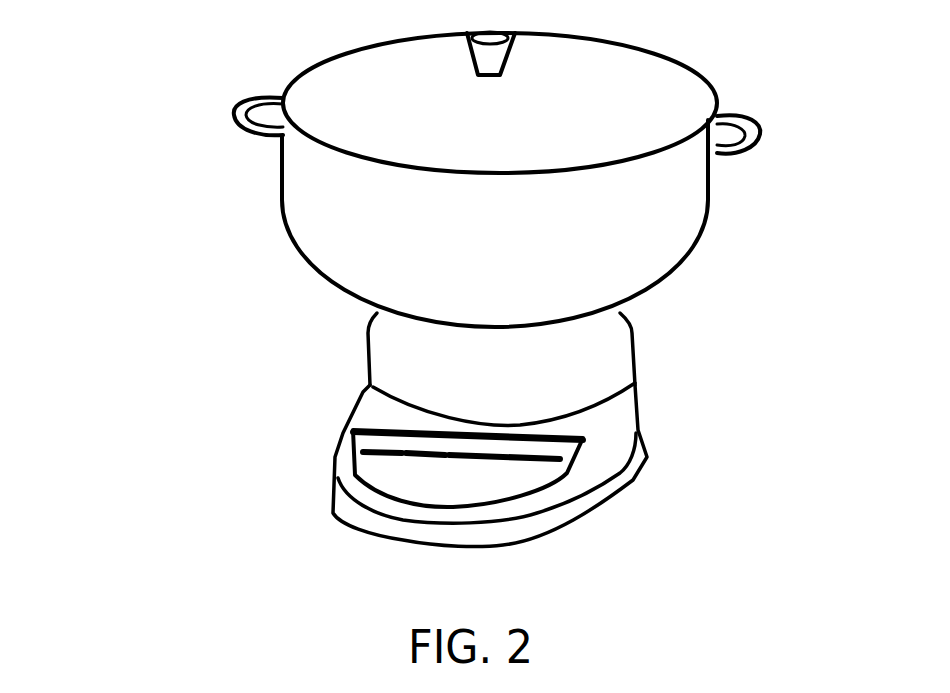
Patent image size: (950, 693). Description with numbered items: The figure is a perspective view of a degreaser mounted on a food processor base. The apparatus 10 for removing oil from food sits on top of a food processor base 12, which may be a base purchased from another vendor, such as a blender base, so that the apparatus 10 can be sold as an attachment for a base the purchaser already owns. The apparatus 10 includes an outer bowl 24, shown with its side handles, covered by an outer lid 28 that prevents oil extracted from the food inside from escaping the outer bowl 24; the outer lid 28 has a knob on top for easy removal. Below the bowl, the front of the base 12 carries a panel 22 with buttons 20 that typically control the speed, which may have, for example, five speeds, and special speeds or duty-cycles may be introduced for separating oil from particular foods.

The apparatus 10 is at (170, 175).
The food processor base 12 is at (607, 418).
The buttons 20 is at (333, 447).
The panel 22 is at (490, 488).
The outer bowl 24 is at (593, 258).
The outer lid 28 is at (560, 92).